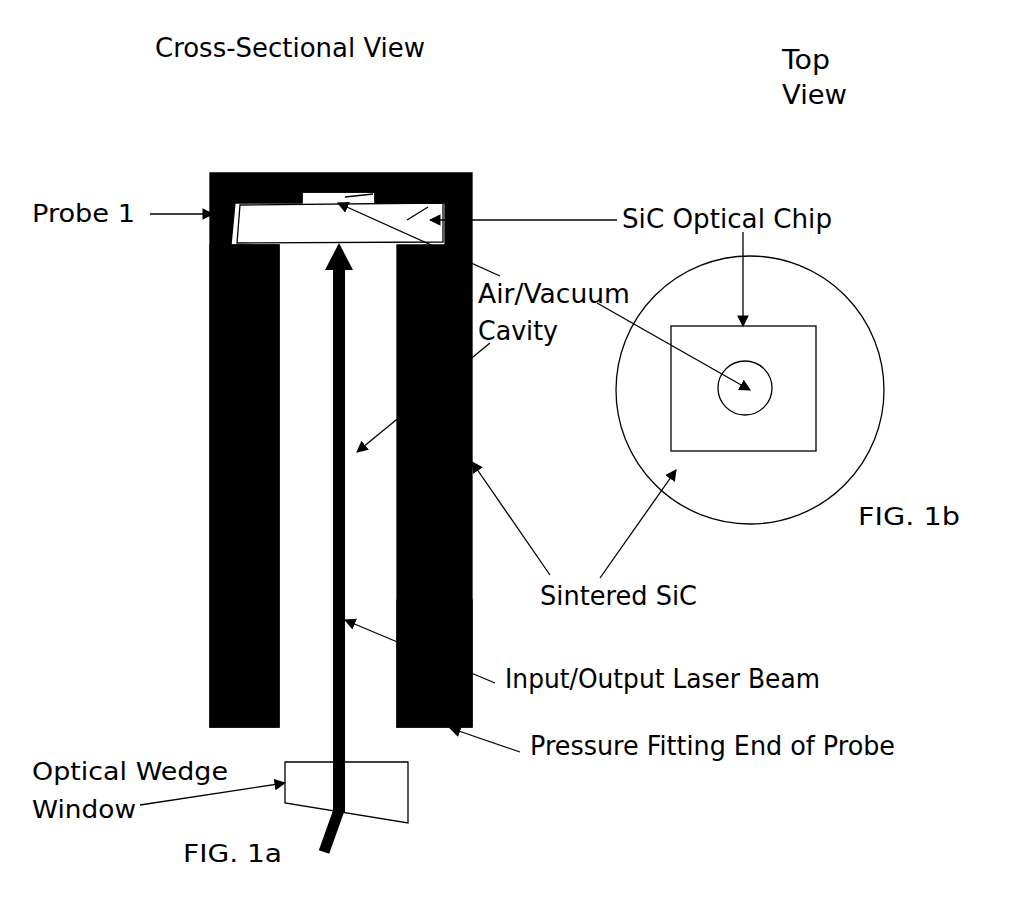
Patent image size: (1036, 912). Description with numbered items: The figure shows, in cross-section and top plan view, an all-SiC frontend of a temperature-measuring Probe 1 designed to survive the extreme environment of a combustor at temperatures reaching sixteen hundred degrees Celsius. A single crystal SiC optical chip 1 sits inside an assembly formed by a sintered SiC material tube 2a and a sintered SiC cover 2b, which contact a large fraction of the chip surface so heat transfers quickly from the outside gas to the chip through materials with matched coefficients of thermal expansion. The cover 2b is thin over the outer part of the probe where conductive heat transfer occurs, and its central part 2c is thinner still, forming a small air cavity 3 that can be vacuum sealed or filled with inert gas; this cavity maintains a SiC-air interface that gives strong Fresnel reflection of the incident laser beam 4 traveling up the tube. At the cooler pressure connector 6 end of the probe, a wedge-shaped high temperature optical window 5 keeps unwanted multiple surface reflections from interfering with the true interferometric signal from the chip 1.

In FIG. 1A, the SiC optical chip 1 is at (433, 173).
In FIG. 1B, the SiC optical chip 1 is at (790, 348).
In FIG. 1A, the sintered SiC material tube 2a is at (220, 398).
In FIG. 1A, the sintered SiC material cover 2b is at (264, 173).
In FIG. 1B, the sintered SiC material cover 2b is at (856, 366).
In FIG. 1A, the central part of the sintered SiC cover 2c is at (337, 173).
In FIG. 1A, the air cavity 3 is at (402, 173).
In FIG. 1A, the incident laser beam 4 is at (328, 518).
In FIG. 1A, the wedge-shaped high temperature optical window 5 is at (408, 780).
In FIG. 1A, the pressure connector 6 is at (427, 728).